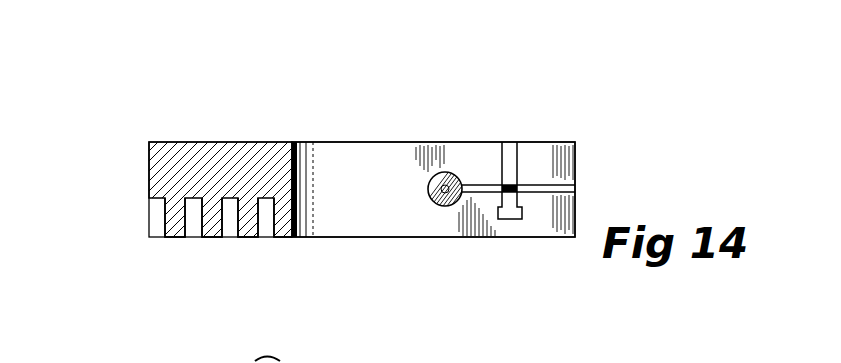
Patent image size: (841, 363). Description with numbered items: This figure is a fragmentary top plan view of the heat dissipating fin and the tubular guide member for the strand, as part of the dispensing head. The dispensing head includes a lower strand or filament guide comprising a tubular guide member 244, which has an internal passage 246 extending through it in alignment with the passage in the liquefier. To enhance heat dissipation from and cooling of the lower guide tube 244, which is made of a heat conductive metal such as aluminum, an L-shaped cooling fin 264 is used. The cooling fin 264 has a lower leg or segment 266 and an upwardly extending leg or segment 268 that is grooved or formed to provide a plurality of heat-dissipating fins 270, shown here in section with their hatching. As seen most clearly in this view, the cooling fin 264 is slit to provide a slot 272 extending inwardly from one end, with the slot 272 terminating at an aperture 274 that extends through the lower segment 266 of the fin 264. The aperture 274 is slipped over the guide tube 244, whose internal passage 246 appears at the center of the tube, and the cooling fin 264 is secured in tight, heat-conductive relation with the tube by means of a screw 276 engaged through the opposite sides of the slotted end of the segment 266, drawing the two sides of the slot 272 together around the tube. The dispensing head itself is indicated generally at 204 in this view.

The cooling fin 264 is at (183, 125).
The upwardly extending leg or segment 268 is at (149, 173).
The heat-dissipating fins 270 is at (268, 238).
The lower leg or segment 266 is at (575, 160).
The shaft disc 204 is at (463, 172).
The aperture 274 is at (452, 171).
The tubular guide member 244 is at (428, 202).
The internal passage 246 is at (447, 207).
The slot 272 is at (577, 187).
The screw 276 is at (507, 222).